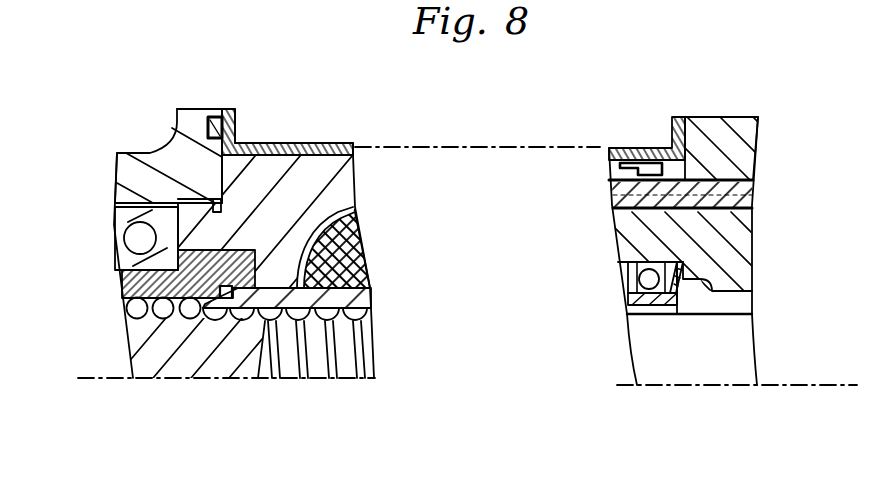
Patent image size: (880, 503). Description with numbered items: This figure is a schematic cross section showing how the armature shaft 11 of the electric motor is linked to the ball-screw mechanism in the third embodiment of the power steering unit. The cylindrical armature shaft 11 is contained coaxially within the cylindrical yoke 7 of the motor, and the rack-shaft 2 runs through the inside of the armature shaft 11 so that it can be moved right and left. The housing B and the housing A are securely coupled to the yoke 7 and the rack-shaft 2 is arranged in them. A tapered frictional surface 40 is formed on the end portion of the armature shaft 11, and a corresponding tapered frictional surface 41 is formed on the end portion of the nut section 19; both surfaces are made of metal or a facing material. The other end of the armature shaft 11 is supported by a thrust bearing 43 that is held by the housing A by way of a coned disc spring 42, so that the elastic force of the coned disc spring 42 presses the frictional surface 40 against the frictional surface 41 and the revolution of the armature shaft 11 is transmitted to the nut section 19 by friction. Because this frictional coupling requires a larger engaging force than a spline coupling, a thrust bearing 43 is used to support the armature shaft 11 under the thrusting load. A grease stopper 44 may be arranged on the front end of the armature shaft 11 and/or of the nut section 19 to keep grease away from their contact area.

The rack-shaft 2 is at (347, 352).
The yoke 7 is at (322, 145).
The armature shaft 11 is at (302, 318).
The nut section 19 is at (122, 295).
The tapered frictional surface 40 is at (243, 308).
The tapered frictional surface 41 is at (243, 252).
The coned disc spring 42 is at (680, 264).
The thrust bearing 43 is at (653, 315).
The grease stopper 44 is at (200, 300).
The housing A is at (718, 128).
The housing B is at (150, 160).